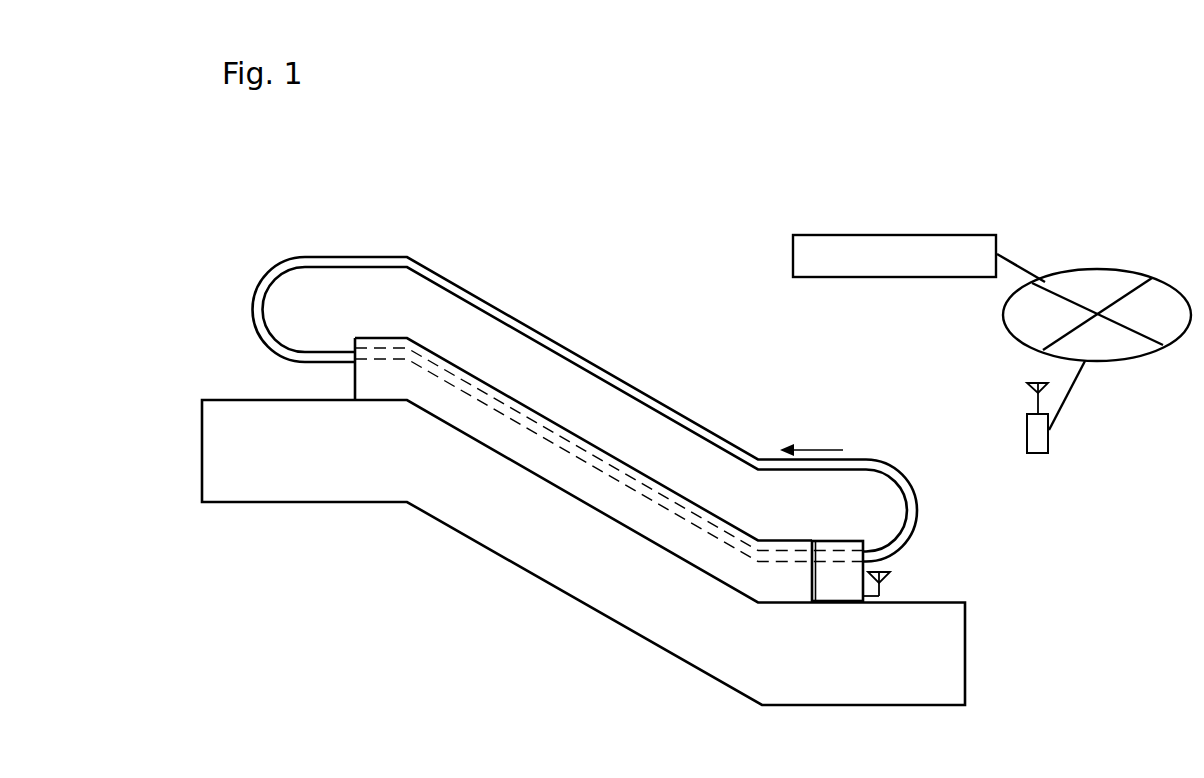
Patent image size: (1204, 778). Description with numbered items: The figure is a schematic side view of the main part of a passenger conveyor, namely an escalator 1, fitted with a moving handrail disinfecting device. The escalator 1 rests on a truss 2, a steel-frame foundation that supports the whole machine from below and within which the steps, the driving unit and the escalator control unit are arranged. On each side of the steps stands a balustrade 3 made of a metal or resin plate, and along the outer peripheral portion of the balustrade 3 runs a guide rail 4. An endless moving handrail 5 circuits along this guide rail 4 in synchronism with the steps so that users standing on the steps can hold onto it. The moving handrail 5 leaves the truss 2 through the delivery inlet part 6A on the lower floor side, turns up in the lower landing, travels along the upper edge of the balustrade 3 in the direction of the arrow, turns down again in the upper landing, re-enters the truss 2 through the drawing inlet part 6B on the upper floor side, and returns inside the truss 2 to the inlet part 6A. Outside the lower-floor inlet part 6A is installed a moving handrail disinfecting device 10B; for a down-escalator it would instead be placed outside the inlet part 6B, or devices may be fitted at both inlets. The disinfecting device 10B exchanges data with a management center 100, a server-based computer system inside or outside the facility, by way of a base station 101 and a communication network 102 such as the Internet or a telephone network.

The escalator 1 is at (274, 248).
The truss 2 is at (546, 578).
The balustrade 3 is at (705, 481).
The guide rail 4 is at (612, 384).
The moving handrail 5 is at (510, 317).
The inlet part (delivery inlet) 6A is at (815, 577).
The inlet part (drawing inlet) 6B is at (355, 373).
The moving handrail disinfecting device 10B is at (912, 580).
The management center 100 is at (895, 234).
The base station 101 is at (1049, 440).
The communication network 102 is at (1134, 269).